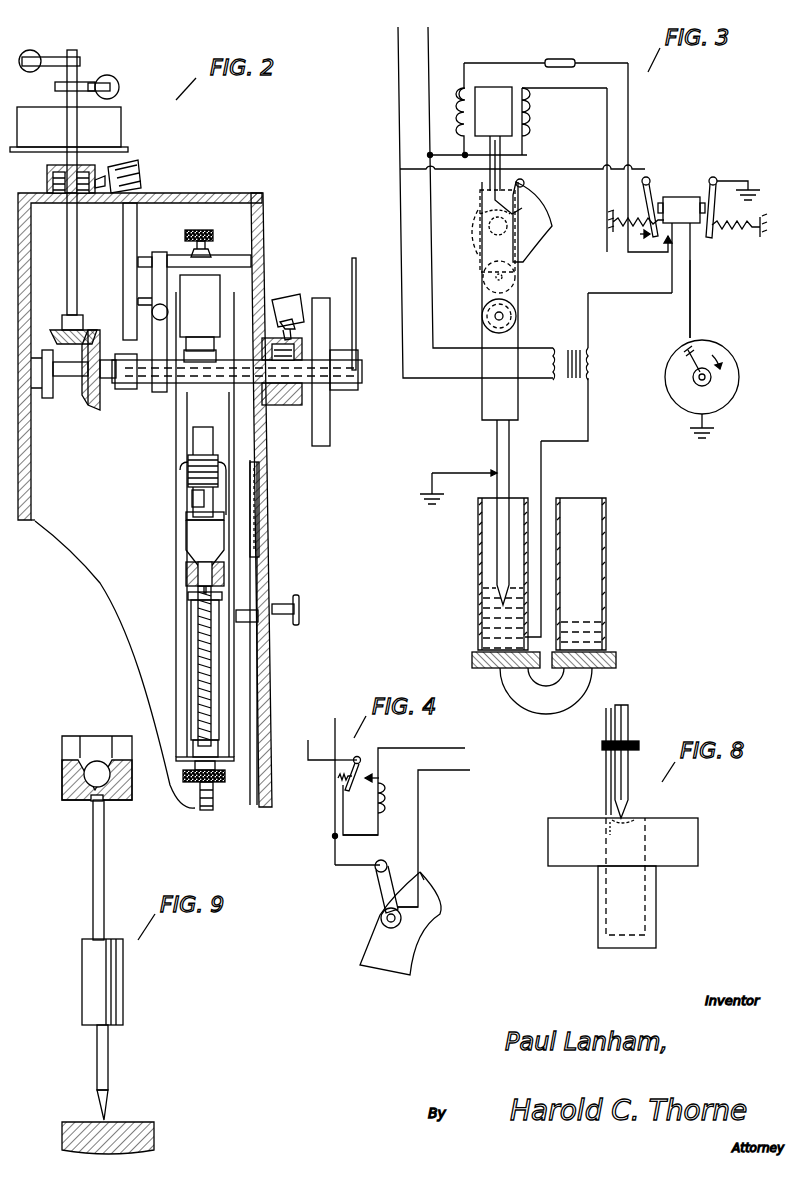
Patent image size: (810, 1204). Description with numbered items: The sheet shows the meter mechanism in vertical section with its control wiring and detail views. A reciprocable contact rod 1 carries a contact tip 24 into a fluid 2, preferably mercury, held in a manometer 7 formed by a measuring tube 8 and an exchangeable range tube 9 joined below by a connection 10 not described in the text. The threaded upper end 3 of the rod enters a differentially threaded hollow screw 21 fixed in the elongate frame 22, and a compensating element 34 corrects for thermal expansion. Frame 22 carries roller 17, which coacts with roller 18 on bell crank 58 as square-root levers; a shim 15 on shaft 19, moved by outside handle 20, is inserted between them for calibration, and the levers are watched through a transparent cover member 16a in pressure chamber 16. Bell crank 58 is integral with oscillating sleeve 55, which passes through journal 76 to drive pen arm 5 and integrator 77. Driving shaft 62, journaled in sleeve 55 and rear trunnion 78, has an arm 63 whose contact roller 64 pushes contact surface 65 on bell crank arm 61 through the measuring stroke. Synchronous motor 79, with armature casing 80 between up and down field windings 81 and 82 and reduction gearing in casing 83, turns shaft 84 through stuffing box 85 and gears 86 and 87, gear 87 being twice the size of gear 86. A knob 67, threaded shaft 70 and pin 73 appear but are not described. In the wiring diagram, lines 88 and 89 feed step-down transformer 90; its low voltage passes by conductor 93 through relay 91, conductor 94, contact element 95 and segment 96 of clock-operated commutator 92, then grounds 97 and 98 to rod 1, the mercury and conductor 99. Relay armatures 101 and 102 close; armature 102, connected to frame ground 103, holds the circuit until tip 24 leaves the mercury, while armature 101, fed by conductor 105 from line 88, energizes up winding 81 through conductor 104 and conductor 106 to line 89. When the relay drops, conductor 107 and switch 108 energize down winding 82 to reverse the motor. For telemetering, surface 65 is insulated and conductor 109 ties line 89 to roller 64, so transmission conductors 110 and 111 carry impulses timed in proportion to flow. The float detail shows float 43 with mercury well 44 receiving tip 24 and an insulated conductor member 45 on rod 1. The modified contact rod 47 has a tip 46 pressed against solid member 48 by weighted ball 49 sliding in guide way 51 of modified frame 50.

In FIG. 3, the contact rod 1 is at (508, 480).
In FIG. 8, the contact rod 1 is at (628, 728).
In FIG. 3, the fluid 2 is at (495, 620).
In FIG. 2, the upper end of contact rod 3 is at (213, 798).
In FIG. 2, the pen arm 5 is at (352, 270).
In FIG. 3, the manometer 7 is at (554, 482).
In FIG. 3, the measuring tube 8 is at (478, 552).
In FIG. 3, the range tube 9 is at (606, 540).
In FIG. 3, the connecting tube 10 is at (534, 700).
In FIG. 2, the shim 15 is at (190, 595).
In FIG. 2, the pressure chamber 16 is at (275, 645).
In FIG. 2, the transparent cover member 16a is at (262, 505).
In FIG. 2, the roller element 17 is at (185, 570).
In FIG. 3, the roller element 17 is at (482, 316).
In FIG. 2, the roller element 18 is at (200, 510).
In FIG. 3, the roller element 18 is at (485, 282).
In FIG. 2, the shaft 19 is at (270, 590).
In FIG. 2, the handle 20 is at (300, 600).
In FIG. 2, the differentially threaded hollow screw 21 is at (222, 774).
In FIG. 2, the elongate frame 22 is at (232, 668).
In FIG. 3, the elongate frame 22 is at (488, 364).
In FIG. 3, the contact tip 24 is at (500, 592).
In FIG. 8, the contact tip 24 is at (628, 815).
In FIG. 2, the compensating element 34 is at (125, 980).
In FIG. 8, the float 43 is at (700, 842).
In FIG. 8, the well 44 is at (650, 826).
In FIG. 8, the conductor member 45 is at (604, 778).
In FIG. 2, the tip 46 is at (108, 1118).
In FIG. 2, the contact rod 47 is at (107, 1050).
In FIG. 2, the solid member 48 is at (130, 1125).
In FIG. 2, the weighted ball 49 is at (87, 776).
In FIG. 2, the elongate frame 50 is at (75, 805).
In FIG. 2, the longitudinal guide way 51 is at (96, 736).
In FIG. 2, the oscillating sleeve 55 is at (237, 360).
In FIG. 2, the bell crank member 58 is at (193, 420).
In FIG. 3, the bell crank member 58 is at (535, 232).
In FIG. 4, the bell crank member 58 is at (420, 942).
In FIG. 3, the arm 61 is at (540, 210).
In FIG. 2, the driving shaft 62 is at (130, 392).
In FIG. 2, the arm 63 is at (155, 252).
In FIG. 4, the arm 63 is at (378, 890).
In FIG. 2, the contact roller member 64 is at (205, 270).
In FIG. 3, the contact roller member 64 is at (525, 180).
In FIG. 4, the contact roller member 64 is at (385, 862).
In FIG. 4, the contact surface 65 is at (425, 870).
In FIG. 2, the adjusting knob 67 is at (205, 230).
In FIG. 2, the threaded shaft 70 is at (197, 630).
In FIG. 2, the pin 73 is at (152, 298).
In FIG. 2, the journal 76 is at (288, 405).
In FIG. 2, the integrator 77 is at (331, 440).
In FIG. 2, the trunnion 78 is at (44, 395).
In FIG. 3, the synchronous motor 79 is at (492, 88).
In FIG. 2, the tubular casing 80 is at (75, 73).
In FIG. 2, the up field winding 81 is at (37, 50).
In FIG. 3, the up field winding 81 is at (532, 118).
In FIG. 4, the up field winding 81 is at (383, 790).
In FIG. 2, the down field winding 82 is at (112, 76).
In FIG. 3, the down field winding 82 is at (458, 112).
In FIG. 2, the casing 83 is at (124, 118).
In FIG. 2, the drive shaft 84 is at (76, 250).
In FIG. 2, the stuffing box 85 is at (48, 182).
In FIG. 2, the gear 86 is at (60, 328).
In FIG. 2, the gear 87 is at (92, 410).
In FIG. 3, the gear 87 is at (478, 238).
In FIG. 3, the line 88 is at (396, 92).
In FIG. 4, the line 88 is at (298, 740).
In FIG. 3, the line 89 is at (430, 62).
In FIG. 4, the line 89 is at (340, 718).
In FIG. 3, the step down transformer 90 is at (570, 345).
In FIG. 3, the relay 91 is at (686, 200).
In FIG. 3, the clock operated commutator 92 is at (690, 385).
In FIG. 3, the conductor 93 is at (665, 294).
In FIG. 3, the conductor 94 is at (712, 292).
In FIG. 3, the contact element 95 is at (708, 362).
In FIG. 3, the segment 96 is at (715, 376).
In FIG. 3, the ground 97 is at (722, 432).
In FIG. 3, the ground 98 is at (426, 508).
In FIG. 3, the conductor 99 is at (590, 441).
In FIG. 3, the armature 101 is at (660, 180).
In FIG. 4, the armature 101 is at (350, 775).
In FIG. 3, the armature 102 is at (716, 180).
In FIG. 3, the ground 103 is at (752, 192).
In FIG. 3, the conductor 104 is at (628, 258).
In FIG. 4, the conductor 104 is at (370, 766).
In FIG. 3, the conductor 105 is at (570, 178).
In FIG. 4, the conductor 105 is at (342, 770).
In FIG. 3, the conductor 106 is at (475, 158).
In FIG. 4, the conductor 106 is at (358, 830).
In FIG. 3, the conductor 107 is at (632, 110).
In FIG. 3, the switch 108 is at (562, 62).
In FIG. 4, the conductor 109 is at (334, 860).
In FIG. 4, the conductor 110 is at (446, 780).
In FIG. 4, the conductor 111 is at (438, 752).